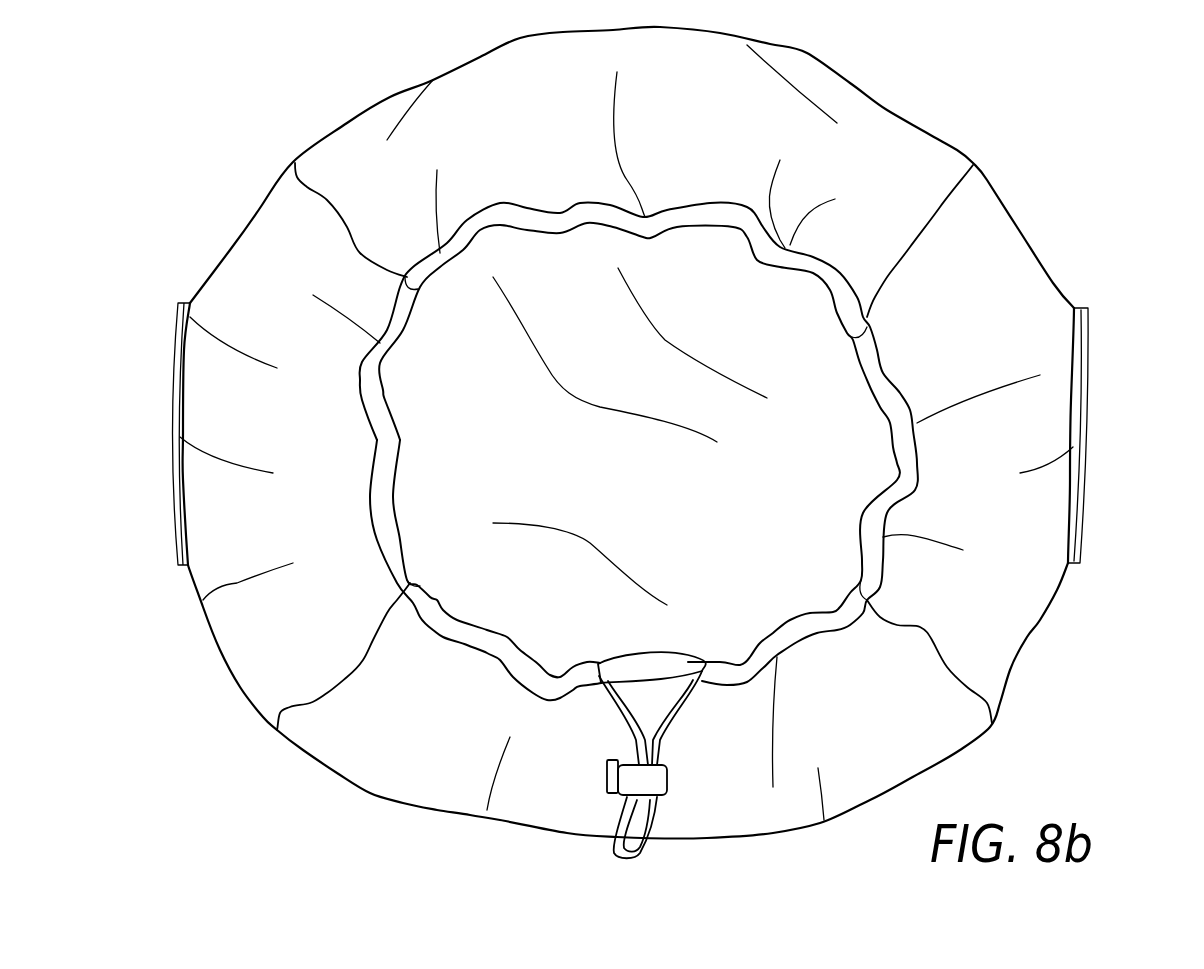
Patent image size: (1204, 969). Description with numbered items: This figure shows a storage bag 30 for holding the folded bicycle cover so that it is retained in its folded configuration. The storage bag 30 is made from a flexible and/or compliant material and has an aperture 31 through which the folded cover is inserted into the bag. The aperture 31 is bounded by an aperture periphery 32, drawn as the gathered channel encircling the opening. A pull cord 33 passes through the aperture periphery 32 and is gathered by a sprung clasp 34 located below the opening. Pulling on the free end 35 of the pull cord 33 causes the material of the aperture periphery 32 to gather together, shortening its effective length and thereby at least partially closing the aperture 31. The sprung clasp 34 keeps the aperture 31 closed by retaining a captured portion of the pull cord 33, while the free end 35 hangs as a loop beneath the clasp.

The storage bag 30 is at (993, 182).
The aperture 31 is at (807, 543).
The aperture periphery 32 is at (917, 447).
The pull cord 33 is at (668, 723).
The sprung clasp 34 is at (603, 777).
The free end 35 is at (643, 858).